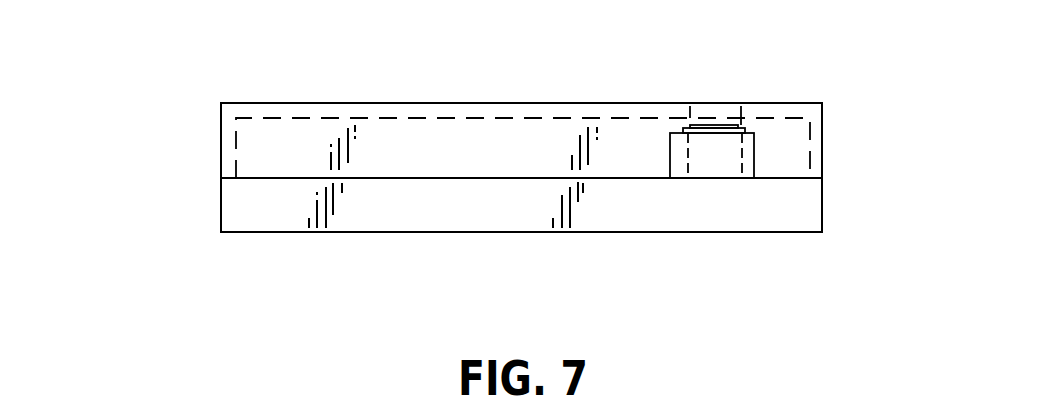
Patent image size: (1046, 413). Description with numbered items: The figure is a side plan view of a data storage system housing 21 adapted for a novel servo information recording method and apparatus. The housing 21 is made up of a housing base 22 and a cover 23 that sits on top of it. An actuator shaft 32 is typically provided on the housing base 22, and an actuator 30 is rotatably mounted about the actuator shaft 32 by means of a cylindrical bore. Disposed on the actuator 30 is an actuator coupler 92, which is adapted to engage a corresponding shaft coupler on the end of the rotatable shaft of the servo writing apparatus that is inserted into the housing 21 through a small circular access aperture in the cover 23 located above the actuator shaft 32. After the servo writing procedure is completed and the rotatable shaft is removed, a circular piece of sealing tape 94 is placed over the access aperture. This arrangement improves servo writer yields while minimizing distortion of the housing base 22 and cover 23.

The data storage system housing 21 is at (190, 171).
The housing base 22 is at (299, 218).
The cover 23 is at (323, 103).
The actuator 30 is at (670, 158).
The actuator shaft 32 is at (740, 160).
The actuator coupler 92 is at (686, 119).
The sealing tape 94 is at (714, 97).